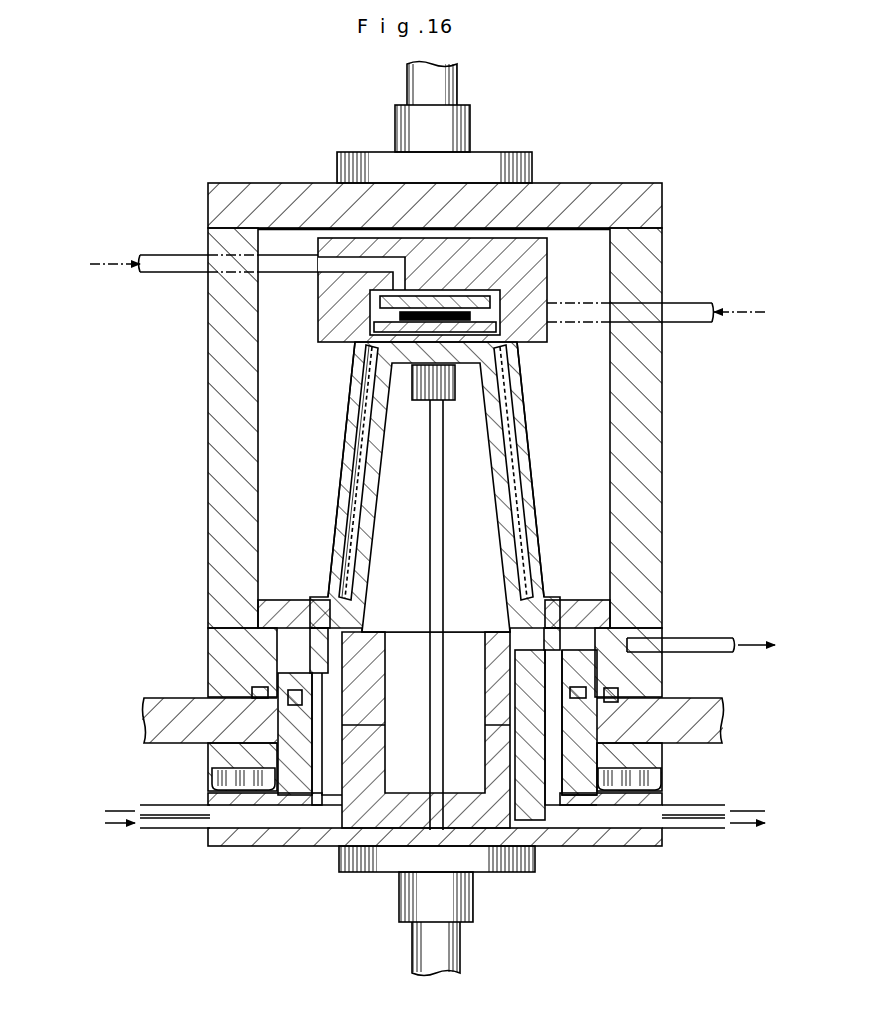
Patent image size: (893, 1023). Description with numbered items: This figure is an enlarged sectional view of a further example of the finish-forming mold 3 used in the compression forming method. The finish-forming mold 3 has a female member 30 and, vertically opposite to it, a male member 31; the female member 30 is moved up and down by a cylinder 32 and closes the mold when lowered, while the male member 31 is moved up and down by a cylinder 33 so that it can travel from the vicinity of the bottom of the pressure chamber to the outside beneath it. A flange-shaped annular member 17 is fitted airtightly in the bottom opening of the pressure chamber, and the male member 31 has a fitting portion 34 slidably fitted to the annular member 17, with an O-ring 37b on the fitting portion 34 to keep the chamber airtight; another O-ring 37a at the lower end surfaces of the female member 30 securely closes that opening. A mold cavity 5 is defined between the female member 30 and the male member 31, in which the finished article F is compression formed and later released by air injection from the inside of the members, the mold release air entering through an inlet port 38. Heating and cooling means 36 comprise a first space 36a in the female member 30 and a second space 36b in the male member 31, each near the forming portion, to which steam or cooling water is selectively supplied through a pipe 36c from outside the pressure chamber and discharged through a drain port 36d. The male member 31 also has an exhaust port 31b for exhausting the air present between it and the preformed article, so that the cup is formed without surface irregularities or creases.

The finish-forming mold 3 is at (601, 162).
The cylinder 32 is at (462, 78).
The inlet port 38 is at (332, 270).
The mold cavity 5 is at (534, 586).
The female member 30 is at (520, 427).
The heating and cooling means 36 is at (549, 472).
The first space 36a is at (515, 507).
The second space 36b is at (510, 472).
The pipe 36c is at (690, 302).
The drain port 36d is at (700, 637).
The finished article F is at (372, 455).
The fitting portion 34 is at (545, 810).
The male member 31 is at (290, 838).
The exhaust port 31b is at (540, 760).
The O-ring 37a is at (257, 693).
The O-ring 37b is at (293, 698).
The annular member 17 is at (605, 755).
The cylinder 33 is at (462, 952).